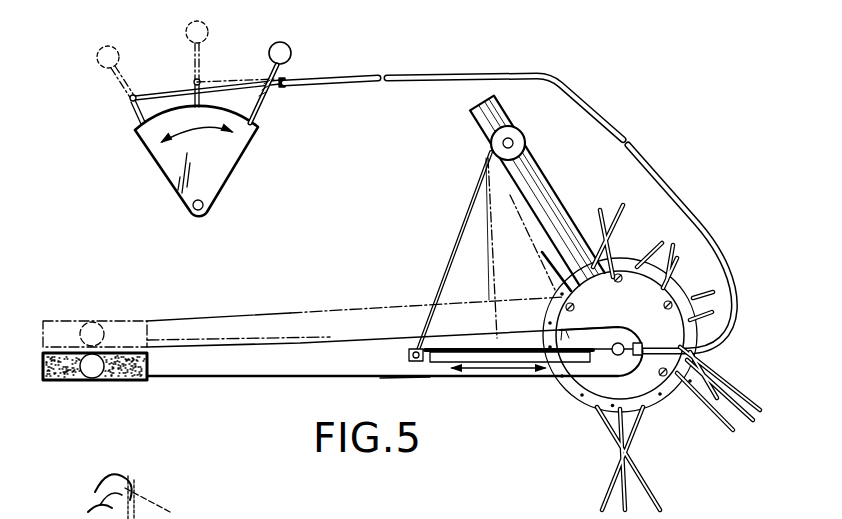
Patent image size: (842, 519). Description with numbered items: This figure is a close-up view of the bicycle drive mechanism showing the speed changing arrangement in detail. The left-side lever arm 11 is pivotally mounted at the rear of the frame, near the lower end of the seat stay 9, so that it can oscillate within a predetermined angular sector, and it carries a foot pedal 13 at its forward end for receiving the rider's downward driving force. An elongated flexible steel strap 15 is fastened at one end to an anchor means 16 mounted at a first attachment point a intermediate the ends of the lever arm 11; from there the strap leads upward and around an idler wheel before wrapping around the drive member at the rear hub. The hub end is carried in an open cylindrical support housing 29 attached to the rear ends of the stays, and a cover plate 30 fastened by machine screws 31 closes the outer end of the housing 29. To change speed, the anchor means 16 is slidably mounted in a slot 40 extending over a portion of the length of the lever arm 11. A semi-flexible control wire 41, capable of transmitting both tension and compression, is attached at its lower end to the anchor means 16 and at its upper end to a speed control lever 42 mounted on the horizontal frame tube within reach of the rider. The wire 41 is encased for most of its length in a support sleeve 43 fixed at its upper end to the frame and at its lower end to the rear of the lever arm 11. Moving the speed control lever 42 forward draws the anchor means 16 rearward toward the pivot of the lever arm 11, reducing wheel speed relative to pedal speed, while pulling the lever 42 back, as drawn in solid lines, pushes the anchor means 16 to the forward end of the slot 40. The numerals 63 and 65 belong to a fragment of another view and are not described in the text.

The seat stay 9 is at (483, 115).
The lever arm 11 is at (257, 376).
The foot pedal 13 is at (57, 383).
The steel strap 15 is at (465, 213).
The anchor means 16 is at (407, 377).
The support housing 29 is at (663, 405).
The cover plate 30 is at (700, 370).
The machine screws 31 is at (675, 287).
The slot 40 is at (450, 372).
The control wire 41 is at (553, 377).
The speed control lever 42 is at (268, 70).
The support sleeve 43 is at (672, 178).
The first attachment point a is at (415, 364).
The fragment element 63 is at (92, 494).
The fragment element 65 is at (85, 508).